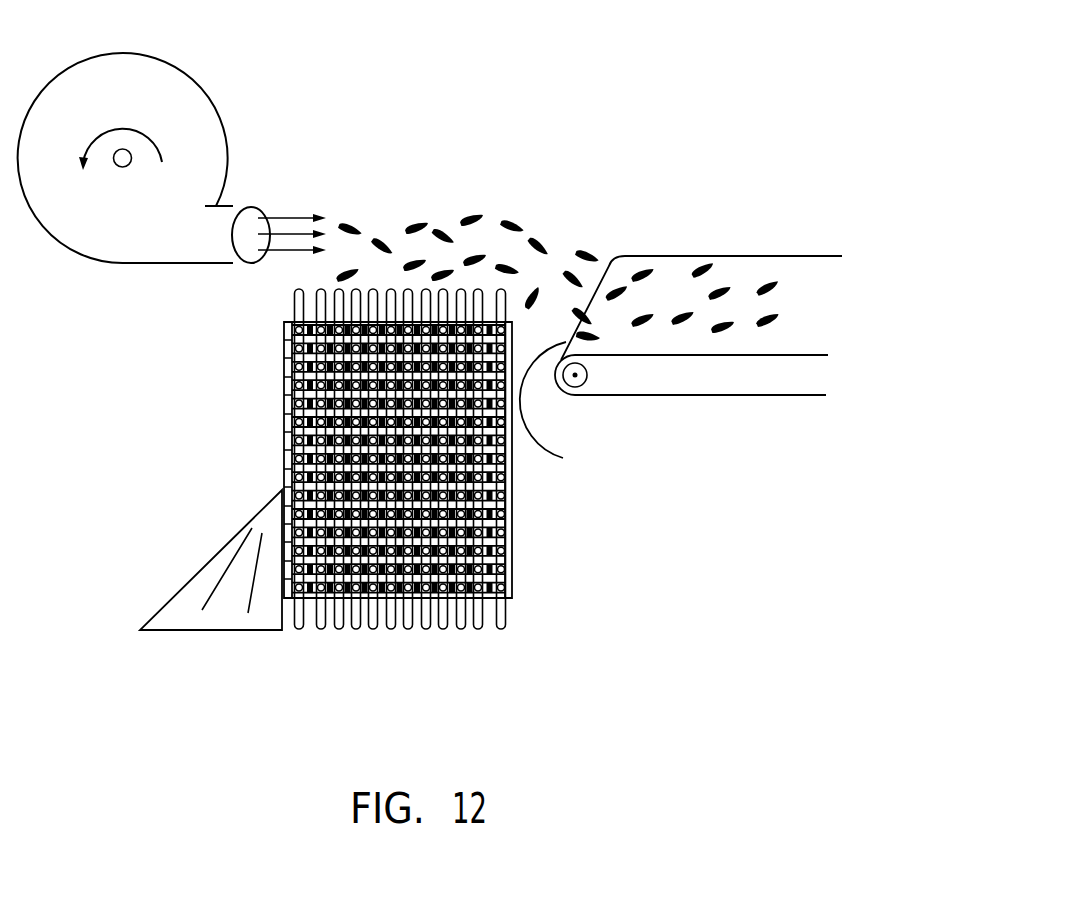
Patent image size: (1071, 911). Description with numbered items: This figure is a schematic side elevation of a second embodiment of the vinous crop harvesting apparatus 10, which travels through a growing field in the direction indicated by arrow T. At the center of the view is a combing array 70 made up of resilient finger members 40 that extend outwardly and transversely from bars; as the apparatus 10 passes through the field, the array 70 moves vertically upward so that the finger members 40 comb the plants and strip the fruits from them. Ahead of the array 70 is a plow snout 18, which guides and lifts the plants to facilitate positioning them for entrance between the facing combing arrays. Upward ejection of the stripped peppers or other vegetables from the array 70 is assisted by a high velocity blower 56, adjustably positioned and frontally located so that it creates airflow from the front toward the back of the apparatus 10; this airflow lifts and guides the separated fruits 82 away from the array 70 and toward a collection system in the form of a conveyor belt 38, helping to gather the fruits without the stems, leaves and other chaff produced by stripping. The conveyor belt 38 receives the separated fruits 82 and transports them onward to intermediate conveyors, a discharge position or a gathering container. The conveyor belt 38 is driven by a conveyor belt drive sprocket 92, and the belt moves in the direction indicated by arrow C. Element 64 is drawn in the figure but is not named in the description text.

The vinous crop harvesting apparatus 10 is at (498, 180).
The plow snout 18 is at (205, 583).
The conveyor belt 38 is at (698, 368).
The resilient finger members 40 is at (503, 590).
The high velocity blower 56 is at (158, 92).
The screen 64 is at (394, 459).
The combing array 70 is at (272, 460).
The separated fruits 82 is at (485, 222).
The conveyor belt drive sprocket 92 is at (587, 378).
The direction of conveyor belt movement C is at (540, 437).
The direction of travel T is at (212, 421).